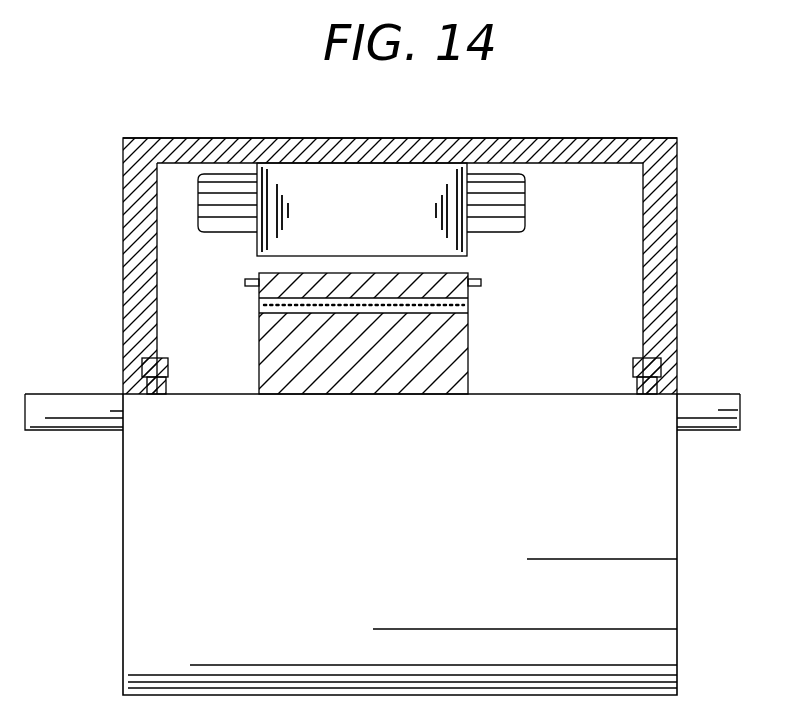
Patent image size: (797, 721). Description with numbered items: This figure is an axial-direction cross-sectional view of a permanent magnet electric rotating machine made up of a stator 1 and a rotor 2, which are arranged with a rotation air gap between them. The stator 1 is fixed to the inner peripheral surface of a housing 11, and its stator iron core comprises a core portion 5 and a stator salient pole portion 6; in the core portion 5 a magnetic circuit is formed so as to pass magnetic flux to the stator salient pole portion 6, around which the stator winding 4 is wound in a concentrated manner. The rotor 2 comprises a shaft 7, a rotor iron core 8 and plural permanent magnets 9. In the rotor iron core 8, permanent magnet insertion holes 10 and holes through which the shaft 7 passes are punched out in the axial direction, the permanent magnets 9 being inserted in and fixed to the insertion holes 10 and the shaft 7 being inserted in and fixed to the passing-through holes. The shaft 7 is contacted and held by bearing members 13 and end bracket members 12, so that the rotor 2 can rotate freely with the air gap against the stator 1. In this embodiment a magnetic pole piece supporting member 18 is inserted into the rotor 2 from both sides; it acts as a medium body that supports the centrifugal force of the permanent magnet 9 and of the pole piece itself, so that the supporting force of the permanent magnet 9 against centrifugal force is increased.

The stator 1 is at (433, 160).
The rotor 2 is at (259, 366).
The stator winding 4 is at (198, 216).
The core portion 5 is at (572, 163).
The stator salient pole portion 6 is at (462, 249).
The shaft 7 is at (707, 398).
The rotor iron core 8 is at (468, 366).
The permanent magnets 9 is at (468, 304).
The permanent magnet insertion holes 10 is at (258, 306).
The housing 11 is at (305, 138).
The end bracket members 12 is at (677, 240).
The bearing members 13 is at (142, 368).
The magnetic pole piece supporting member 18 is at (478, 281).